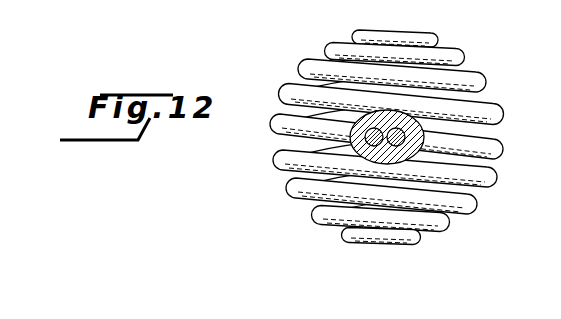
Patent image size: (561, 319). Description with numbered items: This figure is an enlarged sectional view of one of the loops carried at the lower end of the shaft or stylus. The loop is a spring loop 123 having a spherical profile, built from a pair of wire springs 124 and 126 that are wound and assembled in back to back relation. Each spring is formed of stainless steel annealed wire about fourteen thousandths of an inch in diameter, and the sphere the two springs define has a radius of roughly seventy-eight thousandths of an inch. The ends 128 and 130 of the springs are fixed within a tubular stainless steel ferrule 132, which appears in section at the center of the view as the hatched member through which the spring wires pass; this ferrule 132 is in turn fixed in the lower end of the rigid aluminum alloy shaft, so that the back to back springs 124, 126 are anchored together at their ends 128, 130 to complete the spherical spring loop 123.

The spring loop 123 is at (481, 55).
The wire spring 124 is at (348, 50).
The wire spring 126 is at (467, 201).
The end of wire spring 128 is at (312, 145).
The end of wire spring 130 is at (490, 150).
The tubular stainless steel ferrule 132 is at (422, 122).